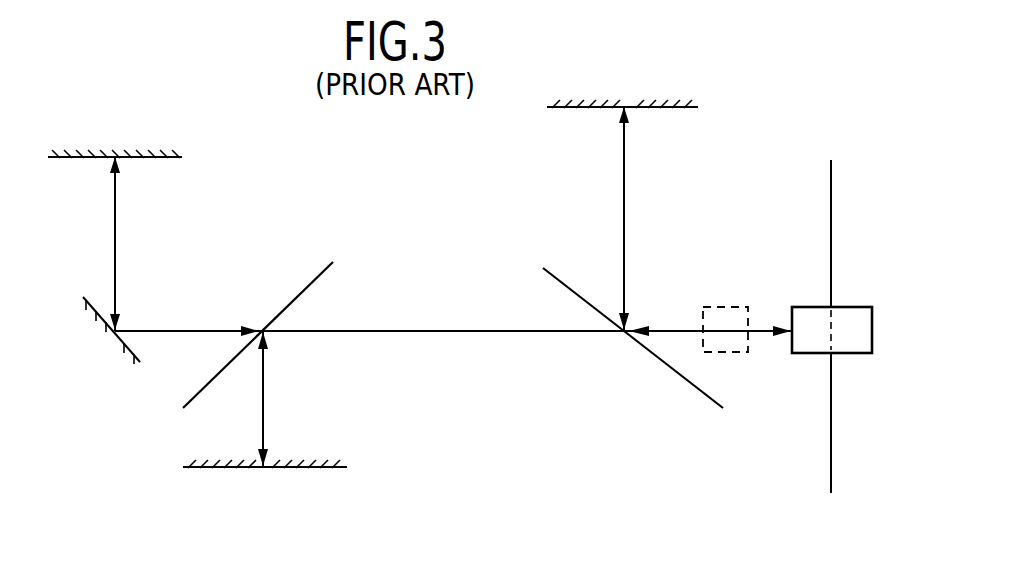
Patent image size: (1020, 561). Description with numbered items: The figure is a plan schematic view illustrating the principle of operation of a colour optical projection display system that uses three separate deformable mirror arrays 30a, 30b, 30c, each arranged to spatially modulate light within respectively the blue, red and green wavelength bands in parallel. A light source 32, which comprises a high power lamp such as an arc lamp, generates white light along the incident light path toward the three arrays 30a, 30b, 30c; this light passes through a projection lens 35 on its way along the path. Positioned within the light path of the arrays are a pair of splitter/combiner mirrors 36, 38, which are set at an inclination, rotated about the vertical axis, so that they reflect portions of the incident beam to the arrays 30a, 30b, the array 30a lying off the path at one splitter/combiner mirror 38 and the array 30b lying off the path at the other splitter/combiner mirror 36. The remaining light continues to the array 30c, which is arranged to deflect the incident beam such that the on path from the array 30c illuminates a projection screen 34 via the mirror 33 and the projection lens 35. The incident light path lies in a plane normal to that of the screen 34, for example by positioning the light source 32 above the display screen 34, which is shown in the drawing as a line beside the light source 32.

The deformable mirror array 30a is at (612, 95).
The deformable mirror array 30b is at (333, 470).
The deformable mirror array 30c is at (117, 157).
The light source 32 is at (850, 355).
The mirror 33 is at (106, 334).
The projection screen 34 is at (828, 185).
The projection lens 35 is at (745, 355).
The splitter/combiner mirror 36 is at (326, 272).
The splitter/combiner mirror 38 is at (673, 372).